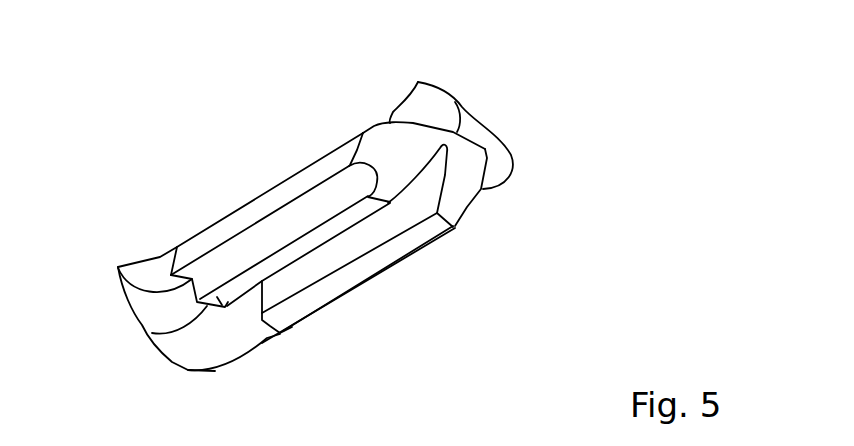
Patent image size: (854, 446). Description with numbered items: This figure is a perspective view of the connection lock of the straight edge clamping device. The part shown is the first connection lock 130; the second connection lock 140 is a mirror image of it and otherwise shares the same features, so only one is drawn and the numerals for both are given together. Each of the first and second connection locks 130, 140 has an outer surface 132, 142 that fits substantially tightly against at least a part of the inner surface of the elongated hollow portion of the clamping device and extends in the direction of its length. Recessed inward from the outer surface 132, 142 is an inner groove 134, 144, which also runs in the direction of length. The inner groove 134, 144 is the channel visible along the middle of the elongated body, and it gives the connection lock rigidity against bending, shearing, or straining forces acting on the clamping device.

The first connection lock 130 is at (378, 232).
The second connection lock 140 is at (378, 232).
The outer surface 132 is at (281, 219).
The outer surface 142 is at (418, 82).
The inner groove 134 is at (356, 278).
The inner groove 144 is at (350, 245).